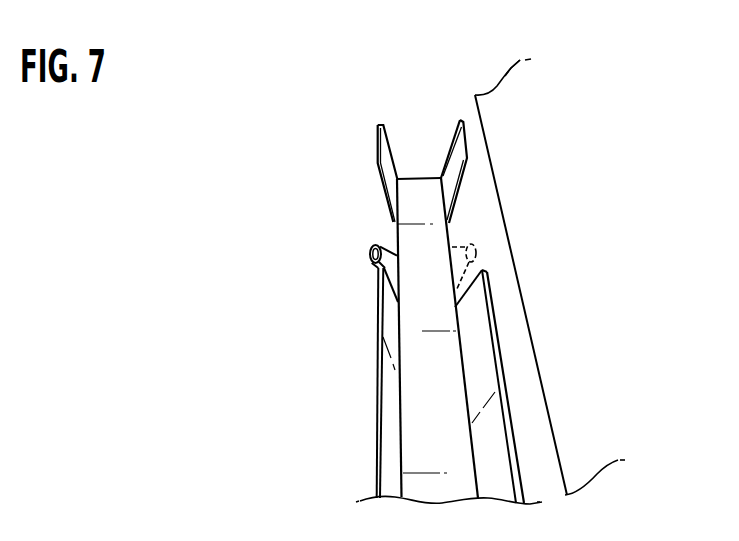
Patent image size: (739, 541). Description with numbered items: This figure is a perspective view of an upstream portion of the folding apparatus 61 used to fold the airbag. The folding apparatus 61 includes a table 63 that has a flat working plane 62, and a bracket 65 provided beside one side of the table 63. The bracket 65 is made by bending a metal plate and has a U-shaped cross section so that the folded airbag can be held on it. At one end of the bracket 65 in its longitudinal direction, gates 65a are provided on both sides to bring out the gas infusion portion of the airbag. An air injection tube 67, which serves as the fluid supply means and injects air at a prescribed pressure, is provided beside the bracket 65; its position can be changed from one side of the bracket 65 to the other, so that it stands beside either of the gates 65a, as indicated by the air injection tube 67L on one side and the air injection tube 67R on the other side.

The folding apparatus 61 is at (323, 109).
The working plane 62 is at (495, 88).
The table 63 is at (515, 80).
The bracket 65 is at (362, 408).
The gates 65a is at (390, 228).
The air injection tube 67 is at (368, 252).
The air injection tube (left position) 67L is at (368, 262).
The air injection tube (right position) 67R is at (478, 248).